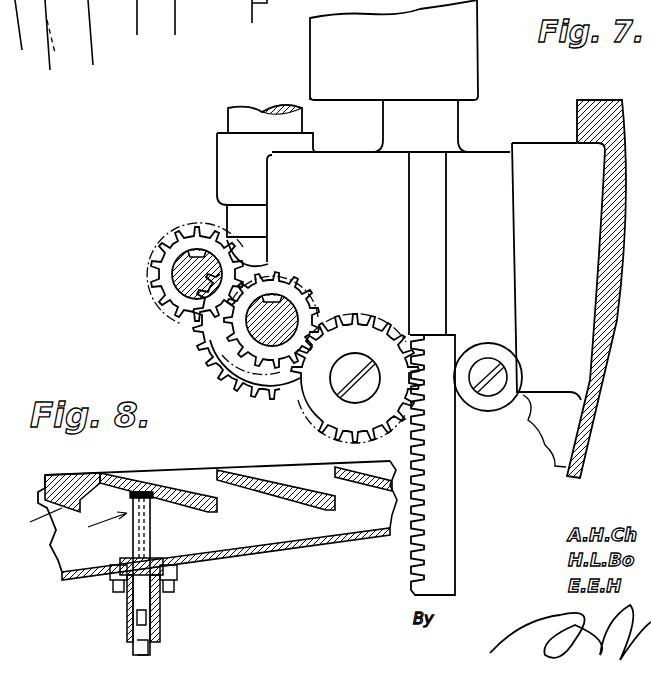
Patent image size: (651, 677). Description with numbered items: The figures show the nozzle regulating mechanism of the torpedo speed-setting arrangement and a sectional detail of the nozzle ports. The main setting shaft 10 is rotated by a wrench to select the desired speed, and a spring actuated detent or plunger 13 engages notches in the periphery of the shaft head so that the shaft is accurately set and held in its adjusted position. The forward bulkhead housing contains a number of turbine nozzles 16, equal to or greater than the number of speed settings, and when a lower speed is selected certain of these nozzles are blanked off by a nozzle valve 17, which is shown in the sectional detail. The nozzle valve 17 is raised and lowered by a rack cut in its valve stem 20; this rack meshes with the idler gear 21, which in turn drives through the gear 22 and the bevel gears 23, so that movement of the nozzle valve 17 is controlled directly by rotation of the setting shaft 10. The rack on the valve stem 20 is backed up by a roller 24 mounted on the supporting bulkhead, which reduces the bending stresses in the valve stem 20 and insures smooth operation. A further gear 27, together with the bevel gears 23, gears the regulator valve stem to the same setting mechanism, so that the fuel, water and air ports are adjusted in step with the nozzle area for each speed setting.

In FIG. 7, the main setting shaft 10 is at (240, 118).
In FIG. 7, the spring actuated detent or plunger 13 is at (448, 556).
In FIG. 8, the turbine nozzles 16 is at (150, 472).
In FIG. 8, the nozzle valve 17 is at (150, 557).
In FIG. 7, the valve stem 20 is at (440, 258).
In FIG. 7, the idler gear 21 is at (362, 334).
In FIG. 7, the gear 22 is at (298, 296).
In FIG. 7, the bevel gears 23 is at (224, 367).
In FIG. 7, the roller 24 is at (507, 398).
In FIG. 7, the gear 27 is at (167, 293).